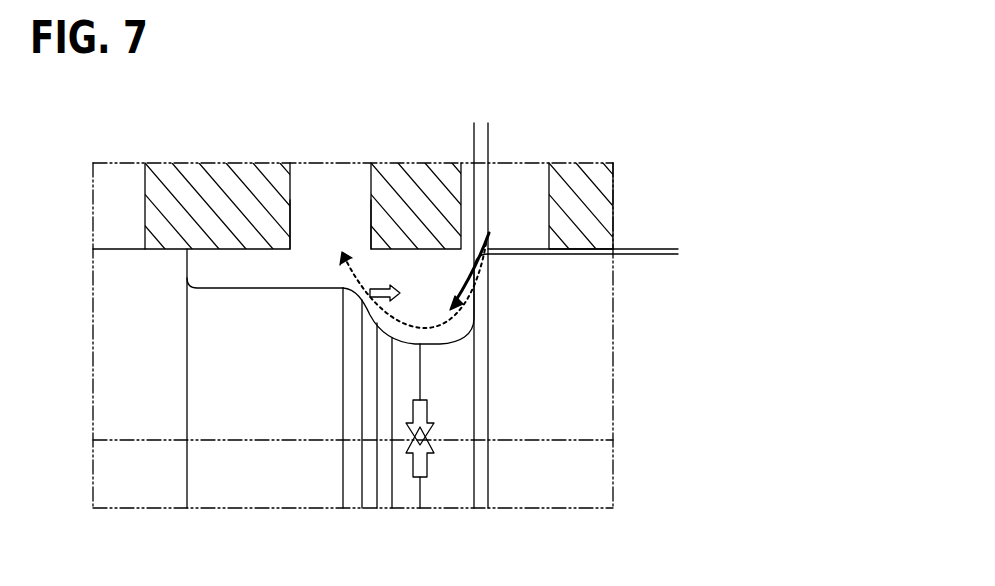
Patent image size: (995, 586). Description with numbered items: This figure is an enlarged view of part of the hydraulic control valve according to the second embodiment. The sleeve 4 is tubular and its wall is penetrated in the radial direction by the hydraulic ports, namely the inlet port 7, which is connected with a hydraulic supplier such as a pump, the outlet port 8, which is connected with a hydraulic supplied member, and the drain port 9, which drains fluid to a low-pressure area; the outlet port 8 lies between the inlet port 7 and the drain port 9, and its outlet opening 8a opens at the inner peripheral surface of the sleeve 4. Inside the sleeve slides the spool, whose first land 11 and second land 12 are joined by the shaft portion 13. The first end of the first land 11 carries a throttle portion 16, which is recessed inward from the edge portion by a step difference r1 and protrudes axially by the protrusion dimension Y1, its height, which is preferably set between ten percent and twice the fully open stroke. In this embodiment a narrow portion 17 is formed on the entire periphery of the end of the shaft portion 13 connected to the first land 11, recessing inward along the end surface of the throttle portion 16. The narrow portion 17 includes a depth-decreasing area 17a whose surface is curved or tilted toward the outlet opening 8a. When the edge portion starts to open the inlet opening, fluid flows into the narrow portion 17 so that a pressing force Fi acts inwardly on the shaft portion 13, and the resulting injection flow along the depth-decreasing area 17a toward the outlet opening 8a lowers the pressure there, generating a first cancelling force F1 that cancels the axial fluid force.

The sleeve 4 is at (595, 190).
The inlet port 7 is at (528, 175).
The outlet port 8 is at (310, 178).
The outlet opening 8a is at (320, 248).
The drain port 9 is at (120, 180).
The first land 11 is at (578, 402).
The second land 12 is at (143, 485).
The shaft portion 13 is at (278, 487).
The throttle portion 16 is at (481, 363).
The narrow portion 17 is at (433, 345).
The depth-decreasing area 17a is at (427, 521).
The protrusion dimension Y1 is at (514, 125).
The step difference r1 is at (670, 220).
The first cancelling force F1 is at (414, 280).
The pressing force Fi is at (417, 465).